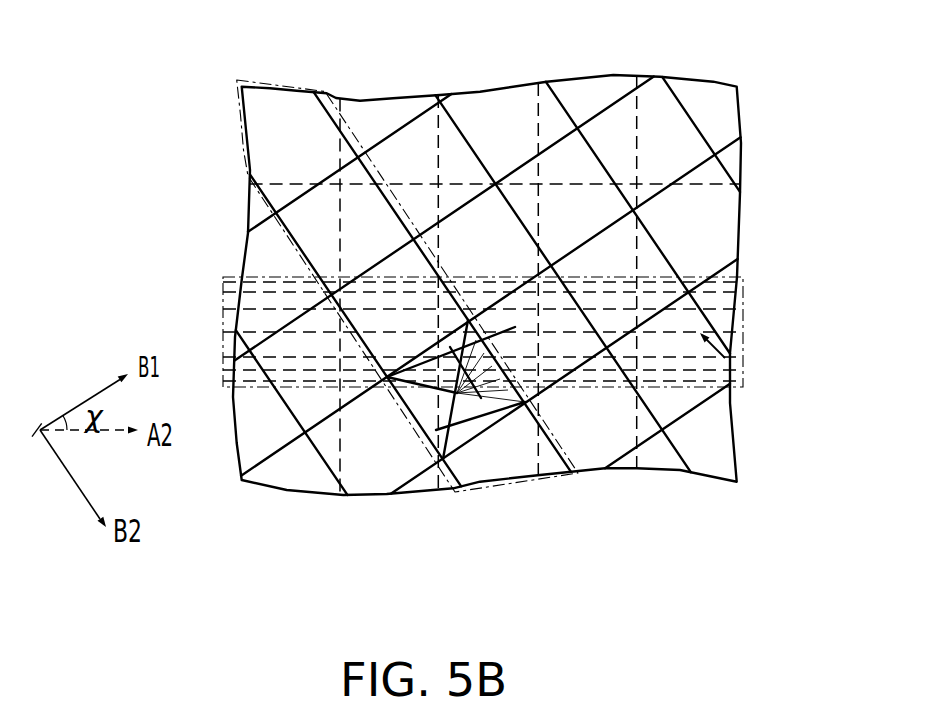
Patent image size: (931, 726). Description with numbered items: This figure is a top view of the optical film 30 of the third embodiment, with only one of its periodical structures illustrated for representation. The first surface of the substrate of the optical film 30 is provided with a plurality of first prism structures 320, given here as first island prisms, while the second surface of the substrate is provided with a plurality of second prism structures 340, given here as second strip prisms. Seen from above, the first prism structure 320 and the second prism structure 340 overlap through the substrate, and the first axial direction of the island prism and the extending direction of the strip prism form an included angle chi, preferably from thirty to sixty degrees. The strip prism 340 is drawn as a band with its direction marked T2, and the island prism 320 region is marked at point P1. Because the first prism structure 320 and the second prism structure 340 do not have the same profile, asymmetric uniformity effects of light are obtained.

The optical film 30 is at (208, 61).
The second prism structure 340 is at (743, 318).
The first prism structure 320 is at (548, 480).
The direction indicator T2 is at (728, 363).
The pucker point P1 is at (457, 393).